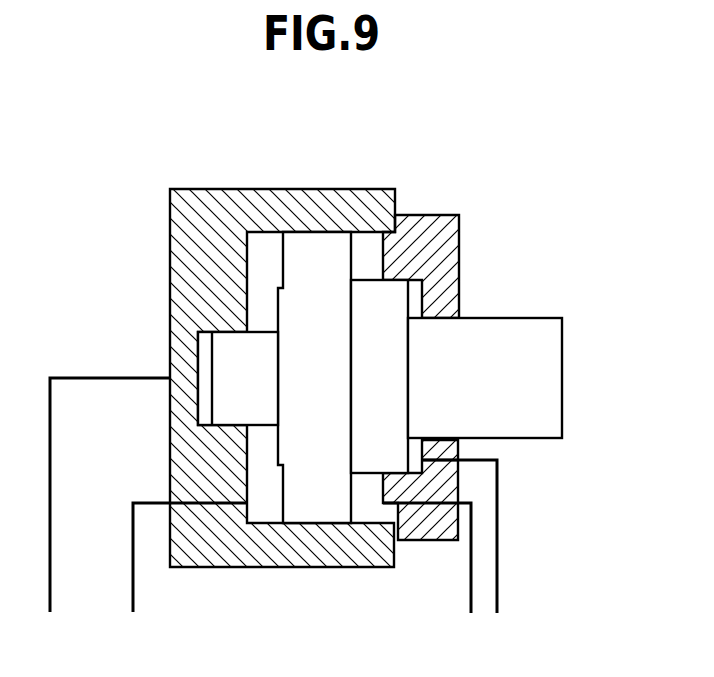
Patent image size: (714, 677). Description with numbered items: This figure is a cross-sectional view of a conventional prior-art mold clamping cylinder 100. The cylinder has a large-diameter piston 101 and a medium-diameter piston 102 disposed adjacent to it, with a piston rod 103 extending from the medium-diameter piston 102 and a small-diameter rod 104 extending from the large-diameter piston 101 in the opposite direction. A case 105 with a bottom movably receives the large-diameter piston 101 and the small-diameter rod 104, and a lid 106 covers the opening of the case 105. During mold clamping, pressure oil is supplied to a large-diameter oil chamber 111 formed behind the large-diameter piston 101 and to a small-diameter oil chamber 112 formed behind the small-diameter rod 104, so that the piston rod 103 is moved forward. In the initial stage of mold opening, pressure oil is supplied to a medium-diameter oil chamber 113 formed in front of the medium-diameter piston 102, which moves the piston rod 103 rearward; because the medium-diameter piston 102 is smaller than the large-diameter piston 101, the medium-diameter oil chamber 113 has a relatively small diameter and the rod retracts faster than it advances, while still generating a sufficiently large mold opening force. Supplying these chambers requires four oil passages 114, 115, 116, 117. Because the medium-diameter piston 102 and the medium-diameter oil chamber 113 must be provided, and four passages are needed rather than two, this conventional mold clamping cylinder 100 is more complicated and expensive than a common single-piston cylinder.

The mold clamping cylinder 100 is at (533, 166).
The large-diameter piston 101 is at (318, 253).
The medium-diameter piston 102 is at (365, 296).
The piston rod 103 is at (537, 372).
The small-diameter rod 104 is at (227, 363).
The case 105 is at (213, 189).
The lid 106 is at (442, 220).
The large-diameter oil chamber 111 is at (265, 485).
The small-diameter oil chamber 112 is at (205, 403).
The medium-diameter oil chamber 113 is at (415, 450).
The oil passage 114 is at (133, 582).
The oil passage 115 is at (50, 556).
The oil passage 116 is at (497, 593).
The oil passage 117 is at (471, 593).